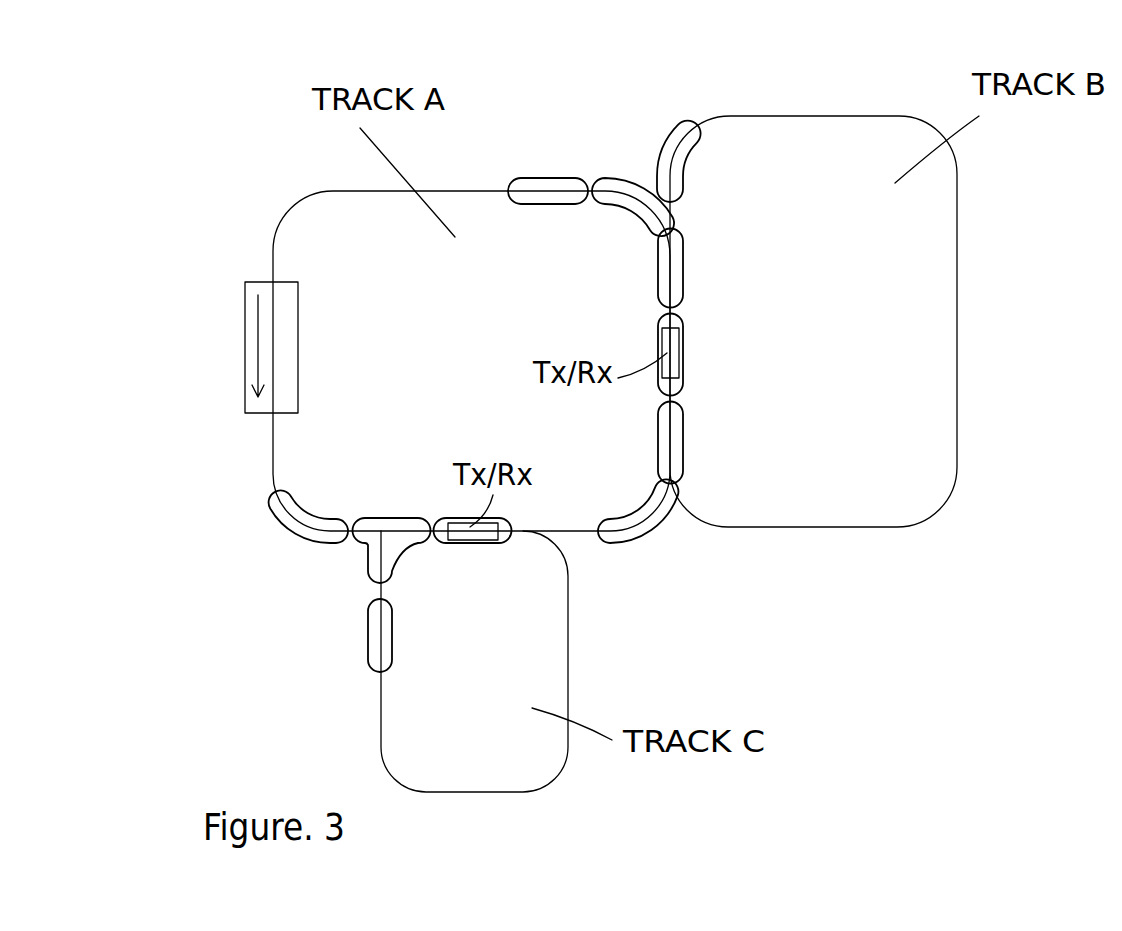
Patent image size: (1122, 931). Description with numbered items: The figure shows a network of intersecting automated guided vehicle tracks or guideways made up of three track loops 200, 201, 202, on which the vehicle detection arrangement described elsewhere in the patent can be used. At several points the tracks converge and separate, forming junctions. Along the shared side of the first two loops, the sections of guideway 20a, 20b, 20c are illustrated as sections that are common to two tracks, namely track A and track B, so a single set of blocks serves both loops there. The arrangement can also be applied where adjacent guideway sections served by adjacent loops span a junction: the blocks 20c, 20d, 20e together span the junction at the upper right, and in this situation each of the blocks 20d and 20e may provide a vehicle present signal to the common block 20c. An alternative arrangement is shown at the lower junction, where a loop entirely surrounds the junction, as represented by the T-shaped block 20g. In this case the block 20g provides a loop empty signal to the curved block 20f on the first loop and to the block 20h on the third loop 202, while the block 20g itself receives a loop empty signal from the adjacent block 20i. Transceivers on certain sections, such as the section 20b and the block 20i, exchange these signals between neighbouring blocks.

The track loop 200 is at (278, 232).
The track loop 201 is at (763, 115).
The track loop 202 is at (569, 656).
The section of guideway 20a is at (683, 437).
The section of guideway 20b is at (683, 347).
The section of guideway 20c is at (683, 257).
The block 20d is at (638, 219).
The block 20e is at (687, 167).
The block 20f is at (312, 543).
The block 20g is at (403, 518).
The block 20h is at (368, 638).
The block 20i is at (455, 543).